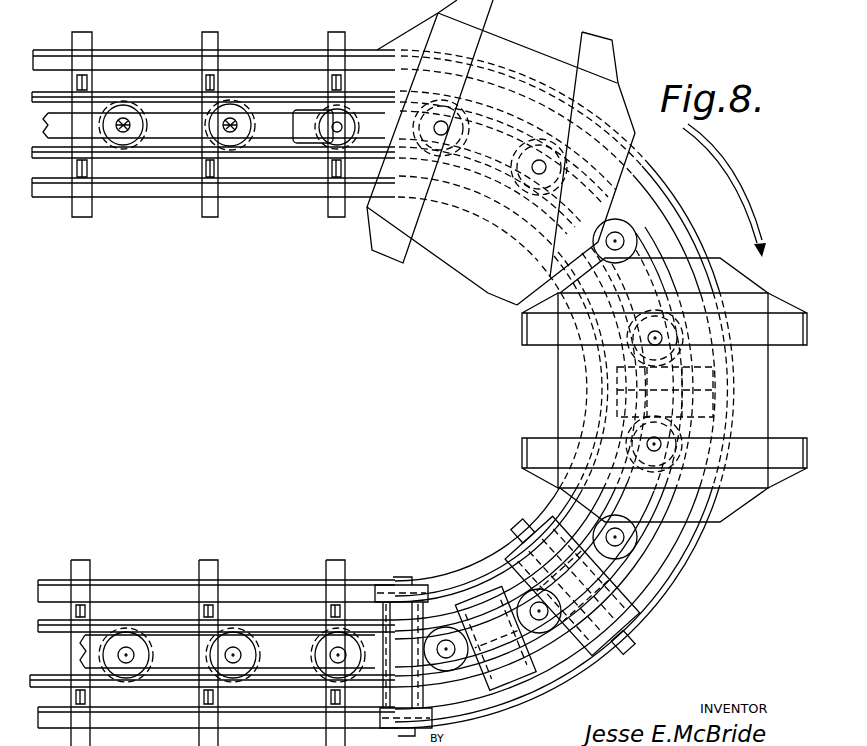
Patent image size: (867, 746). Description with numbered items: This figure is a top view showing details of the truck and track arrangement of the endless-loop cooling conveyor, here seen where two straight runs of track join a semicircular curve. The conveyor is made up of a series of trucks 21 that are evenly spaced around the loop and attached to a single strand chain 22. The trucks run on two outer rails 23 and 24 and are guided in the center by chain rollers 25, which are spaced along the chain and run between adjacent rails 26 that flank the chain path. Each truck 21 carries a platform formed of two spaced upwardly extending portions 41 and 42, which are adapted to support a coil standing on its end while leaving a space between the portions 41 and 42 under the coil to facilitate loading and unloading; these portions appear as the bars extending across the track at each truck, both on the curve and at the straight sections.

The truck 21 is at (530, 62).
The single strand chain 22 is at (307, 140).
The rail 23 is at (257, 62).
The rail 24 is at (260, 190).
The chain roller 25 is at (230, 107).
The adjacent rail 26 is at (282, 98).
The upwardly extending portion 41 is at (485, 12).
The upwardly extending portion 42 is at (606, 60).